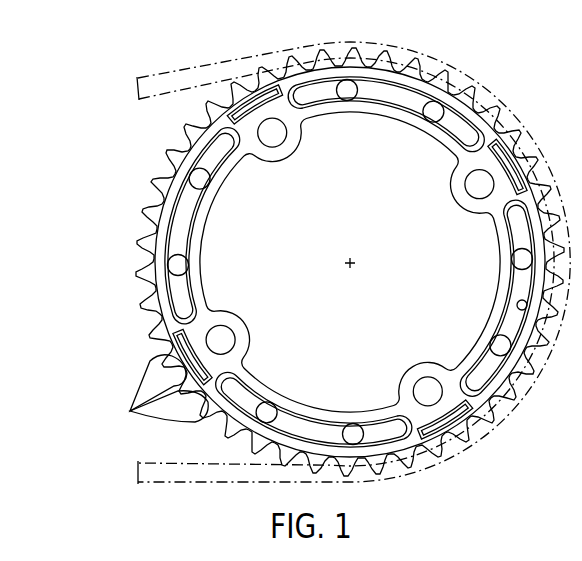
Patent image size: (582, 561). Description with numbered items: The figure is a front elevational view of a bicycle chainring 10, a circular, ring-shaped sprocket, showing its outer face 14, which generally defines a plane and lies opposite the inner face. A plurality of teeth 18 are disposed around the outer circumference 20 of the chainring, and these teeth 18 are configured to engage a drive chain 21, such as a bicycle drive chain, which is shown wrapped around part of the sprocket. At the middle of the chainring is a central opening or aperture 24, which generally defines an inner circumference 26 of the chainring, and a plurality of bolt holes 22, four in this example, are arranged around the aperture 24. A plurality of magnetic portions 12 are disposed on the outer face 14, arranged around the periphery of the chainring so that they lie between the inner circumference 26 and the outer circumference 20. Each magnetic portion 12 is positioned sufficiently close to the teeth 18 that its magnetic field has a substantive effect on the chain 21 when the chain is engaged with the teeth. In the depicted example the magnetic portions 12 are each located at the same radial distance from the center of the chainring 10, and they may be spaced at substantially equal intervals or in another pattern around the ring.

The chainring 10 is at (97, 221).
The magnetic portions 12 is at (348, 96).
The outer face 14 is at (165, 211).
The teeth 18 is at (131, 411).
The outer circumference 20 is at (106, 314).
The drive chain 21 is at (172, 70).
The bolt holes 22 is at (276, 140).
The aperture 24 is at (236, 242).
The inner circumference 26 is at (456, 236).